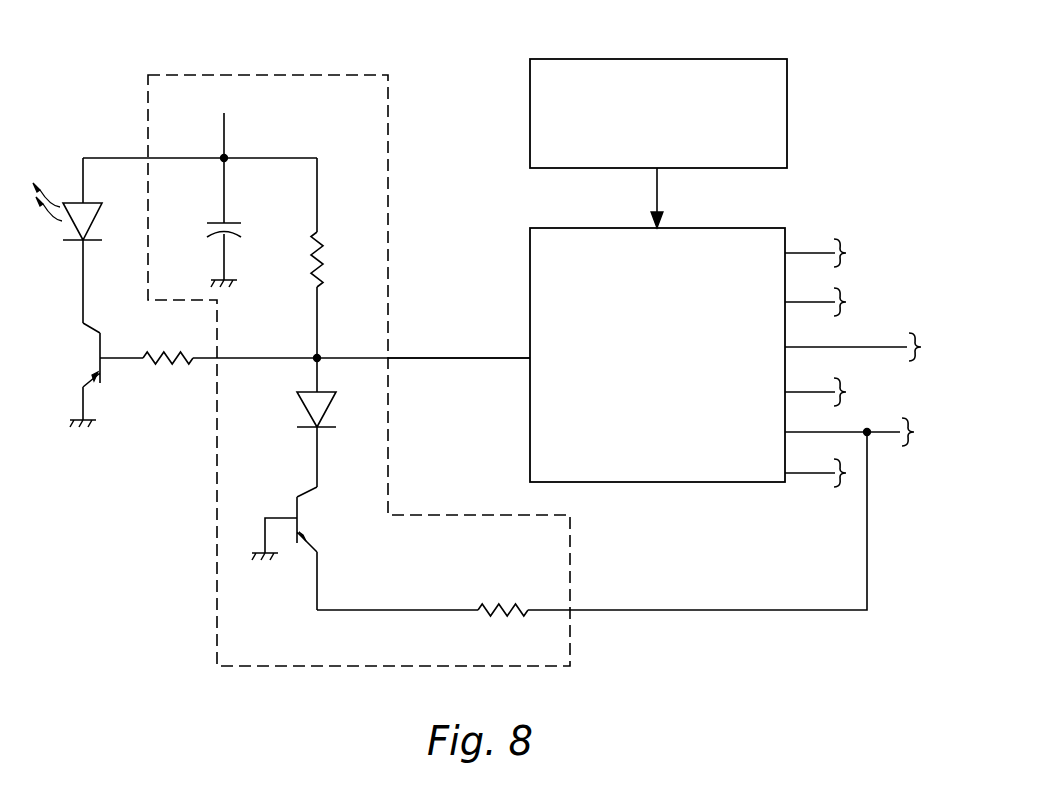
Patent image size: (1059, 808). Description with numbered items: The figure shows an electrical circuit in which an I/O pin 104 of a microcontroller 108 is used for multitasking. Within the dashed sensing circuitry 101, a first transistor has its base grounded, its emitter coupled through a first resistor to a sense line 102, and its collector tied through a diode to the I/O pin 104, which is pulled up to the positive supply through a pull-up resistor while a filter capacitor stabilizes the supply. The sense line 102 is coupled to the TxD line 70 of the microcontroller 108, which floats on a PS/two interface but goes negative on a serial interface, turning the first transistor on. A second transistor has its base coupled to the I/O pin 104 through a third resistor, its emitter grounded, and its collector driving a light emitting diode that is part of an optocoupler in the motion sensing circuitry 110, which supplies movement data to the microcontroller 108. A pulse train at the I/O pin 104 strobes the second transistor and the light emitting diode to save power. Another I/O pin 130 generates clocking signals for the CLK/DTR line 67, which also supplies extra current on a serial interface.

The sensing circuitry 101 is at (217, 592).
The sense line 102 is at (787, 612).
The I/O pin 104 is at (400, 361).
The microcontroller 108 is at (530, 256).
The motion sensing circuitry 110 is at (787, 129).
The I/O pin 130 is at (786, 348).
The CLK/DTR line 67 is at (898, 342).
The TxD line 70 is at (876, 430).